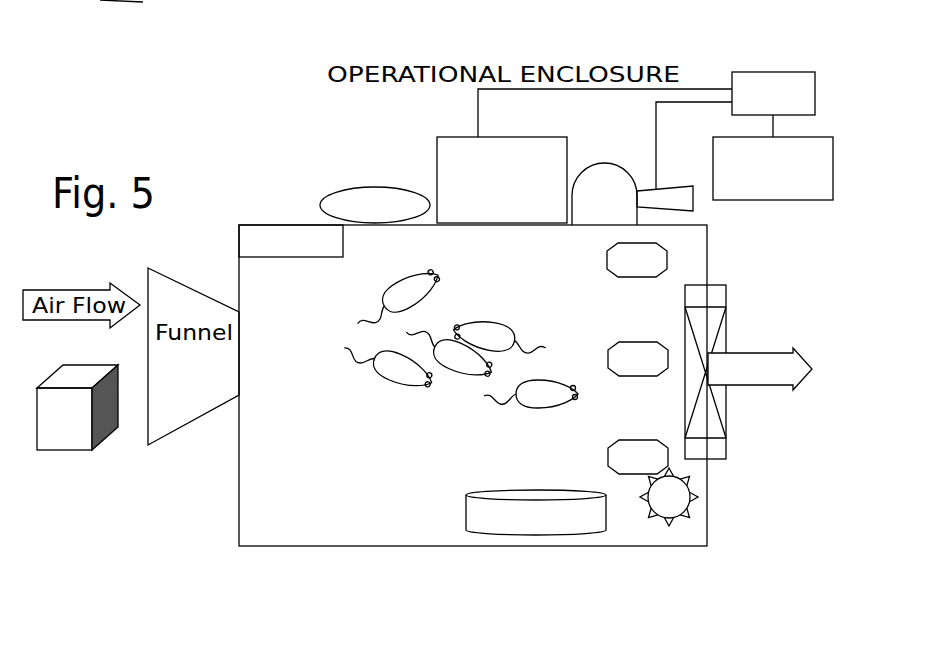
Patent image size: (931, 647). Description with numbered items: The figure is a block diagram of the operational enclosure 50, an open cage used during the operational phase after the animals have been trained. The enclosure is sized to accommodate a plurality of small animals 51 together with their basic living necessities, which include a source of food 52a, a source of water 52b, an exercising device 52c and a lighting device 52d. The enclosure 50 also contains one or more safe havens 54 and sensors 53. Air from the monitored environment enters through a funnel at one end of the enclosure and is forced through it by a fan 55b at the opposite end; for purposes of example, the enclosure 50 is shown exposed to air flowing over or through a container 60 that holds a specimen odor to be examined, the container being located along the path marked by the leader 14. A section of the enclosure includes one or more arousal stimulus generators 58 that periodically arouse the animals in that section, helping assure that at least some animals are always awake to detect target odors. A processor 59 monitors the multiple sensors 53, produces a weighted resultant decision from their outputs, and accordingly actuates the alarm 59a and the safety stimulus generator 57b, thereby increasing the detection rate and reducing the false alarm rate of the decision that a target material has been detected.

The system housing 14 is at (233, 215).
The operational enclosure 50 is at (282, 199).
The small animals 51 is at (422, 290).
The food 52a is at (255, 251).
The source of water 52b is at (378, 195).
The exercising device 52c is at (513, 495).
The lighting device 52d is at (682, 505).
The sensors 53 is at (693, 207).
The safe havens 54 is at (610, 172).
The fan 55b is at (750, 385).
The safety stimulus generator 57b is at (437, 158).
The arousal stimulus generators 58 is at (612, 260).
The processor 59 is at (805, 80).
The alarm 59a is at (818, 197).
The container 60 is at (105, 430).